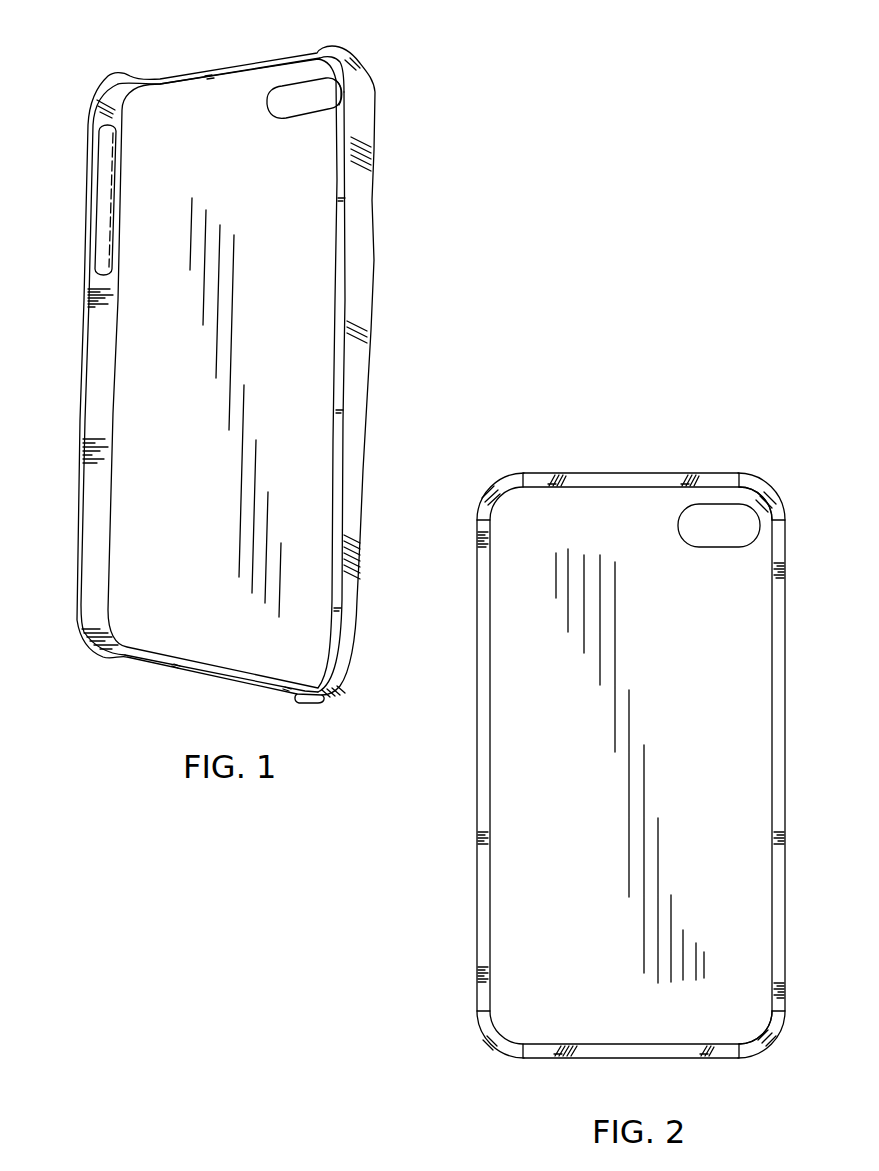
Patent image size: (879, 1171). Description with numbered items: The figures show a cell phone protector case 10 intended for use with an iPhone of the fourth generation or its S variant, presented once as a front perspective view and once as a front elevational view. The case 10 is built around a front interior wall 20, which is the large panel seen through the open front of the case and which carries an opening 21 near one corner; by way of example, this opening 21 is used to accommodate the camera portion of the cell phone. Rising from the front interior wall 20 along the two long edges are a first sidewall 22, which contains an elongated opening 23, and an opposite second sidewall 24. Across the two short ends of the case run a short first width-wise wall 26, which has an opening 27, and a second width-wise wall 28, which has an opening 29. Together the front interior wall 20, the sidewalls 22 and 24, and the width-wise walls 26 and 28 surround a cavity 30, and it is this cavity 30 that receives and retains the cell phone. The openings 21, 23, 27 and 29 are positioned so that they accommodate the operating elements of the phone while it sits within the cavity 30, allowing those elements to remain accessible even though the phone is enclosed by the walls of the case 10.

In FIG. 1, the cell phone protector case 10 is at (426, 148).
In FIG. 2, the cell phone protector case 10 is at (412, 877).
In FIG. 1, the front interior wall 20 is at (185, 122).
In FIG. 2, the front interior wall 20 is at (574, 522).
In FIG. 1, the opening 21 is at (300, 101).
In FIG. 2, the opening 21 is at (708, 518).
In FIG. 1, the first sidewall 22 is at (86, 352).
In FIG. 2, the first sidewall 22 is at (478, 777).
In FIG. 1, the opening 23 is at (100, 202).
In FIG. 1, the second sidewall 24 is at (363, 278).
In FIG. 2, the second sidewall 24 is at (778, 786).
In FIG. 1, the short first width-wise wall 26 is at (336, 52).
In FIG. 2, the short first width-wise wall 26 is at (756, 478).
In FIG. 1, the opening 27 is at (233, 72).
In FIG. 2, the opening 27 is at (630, 481).
In FIG. 1, the second width-wise wall 28 is at (312, 703).
In FIG. 2, the second width-wise wall 28 is at (748, 1052).
In FIG. 1, the opening 29 is at (202, 666).
In FIG. 2, the opening 29 is at (553, 1052).
In FIG. 1, the cavity 30 is at (172, 391).
In FIG. 2, the cavity 30 is at (576, 777).